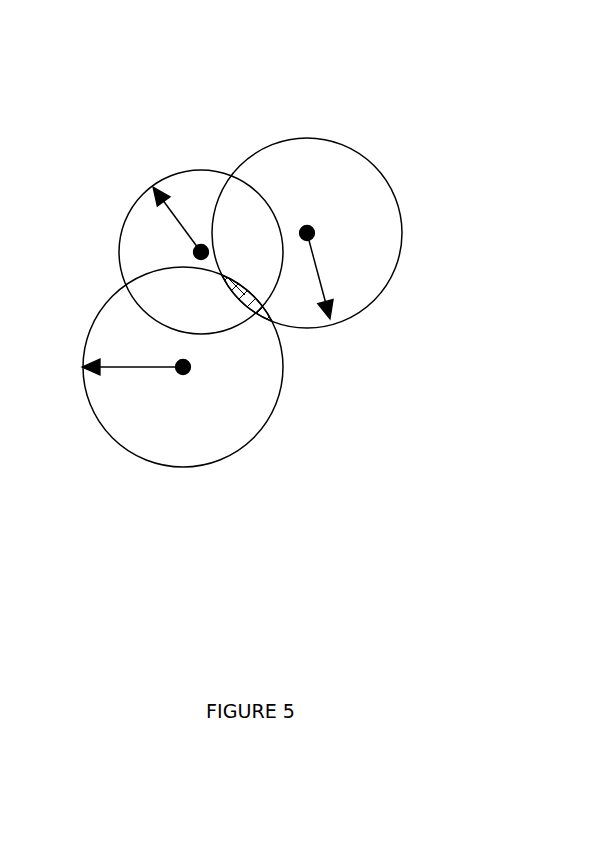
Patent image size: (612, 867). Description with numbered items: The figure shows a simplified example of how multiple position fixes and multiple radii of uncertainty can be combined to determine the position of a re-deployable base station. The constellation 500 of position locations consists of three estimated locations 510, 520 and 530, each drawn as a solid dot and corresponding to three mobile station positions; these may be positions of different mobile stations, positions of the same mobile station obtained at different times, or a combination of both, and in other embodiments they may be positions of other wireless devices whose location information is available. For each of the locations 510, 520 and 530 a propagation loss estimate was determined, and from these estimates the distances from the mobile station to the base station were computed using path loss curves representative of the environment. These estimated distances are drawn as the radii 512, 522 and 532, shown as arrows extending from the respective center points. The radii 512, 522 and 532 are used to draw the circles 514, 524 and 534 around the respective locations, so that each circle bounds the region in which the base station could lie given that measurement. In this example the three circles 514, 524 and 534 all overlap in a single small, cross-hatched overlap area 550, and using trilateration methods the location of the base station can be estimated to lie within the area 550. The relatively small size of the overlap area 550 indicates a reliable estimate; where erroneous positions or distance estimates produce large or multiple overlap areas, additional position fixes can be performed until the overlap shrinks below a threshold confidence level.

The constellation of position locations 500 is at (269, 24).
The estimated location 510 is at (178, 376).
The radius 512 is at (133, 362).
The circle 514 is at (183, 467).
The estimated location 520 is at (306, 228).
The radius 522 is at (325, 274).
The circle 524 is at (403, 233).
The estimated location 530 is at (200, 246).
The radius 532 is at (168, 222).
The circle 534 is at (117, 252).
The overlap area 550 is at (263, 322).